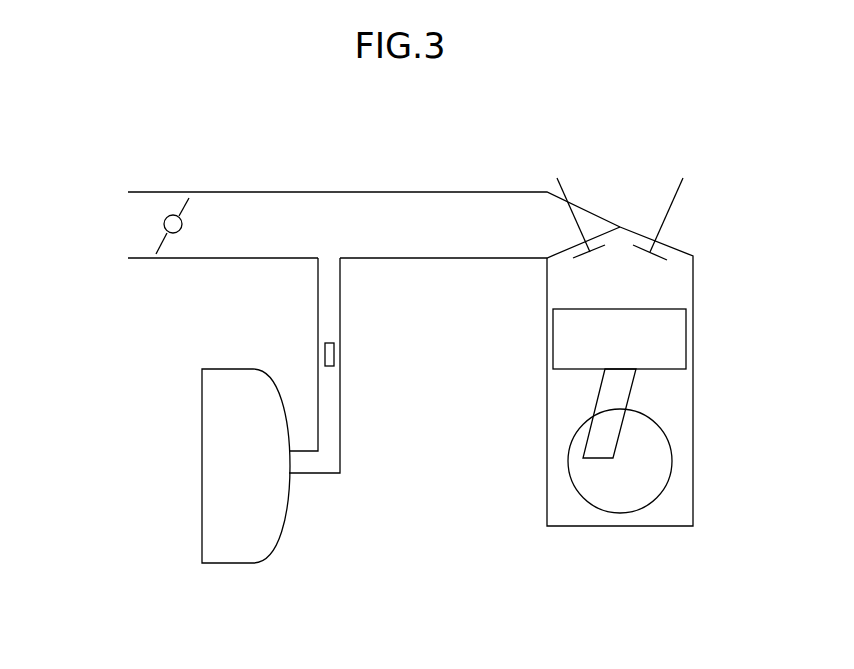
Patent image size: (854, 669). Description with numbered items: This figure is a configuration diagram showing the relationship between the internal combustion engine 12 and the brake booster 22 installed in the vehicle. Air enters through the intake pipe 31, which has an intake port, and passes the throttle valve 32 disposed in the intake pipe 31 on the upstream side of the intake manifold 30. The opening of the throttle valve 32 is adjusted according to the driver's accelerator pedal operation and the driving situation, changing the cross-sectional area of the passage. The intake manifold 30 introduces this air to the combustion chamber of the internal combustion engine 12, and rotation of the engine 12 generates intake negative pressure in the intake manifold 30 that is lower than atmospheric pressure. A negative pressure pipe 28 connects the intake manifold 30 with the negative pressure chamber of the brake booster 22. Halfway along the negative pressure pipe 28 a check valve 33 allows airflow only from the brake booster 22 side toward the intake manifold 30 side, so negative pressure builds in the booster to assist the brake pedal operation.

The internal combustion engine 12 is at (693, 470).
The brake booster 22 is at (287, 515).
The negative pressure pipe 28 is at (341, 431).
The intake manifold 30 is at (415, 192).
The intake pipe 31 is at (168, 192).
The throttle valve 32 is at (158, 247).
The check valve 33 is at (334, 353).